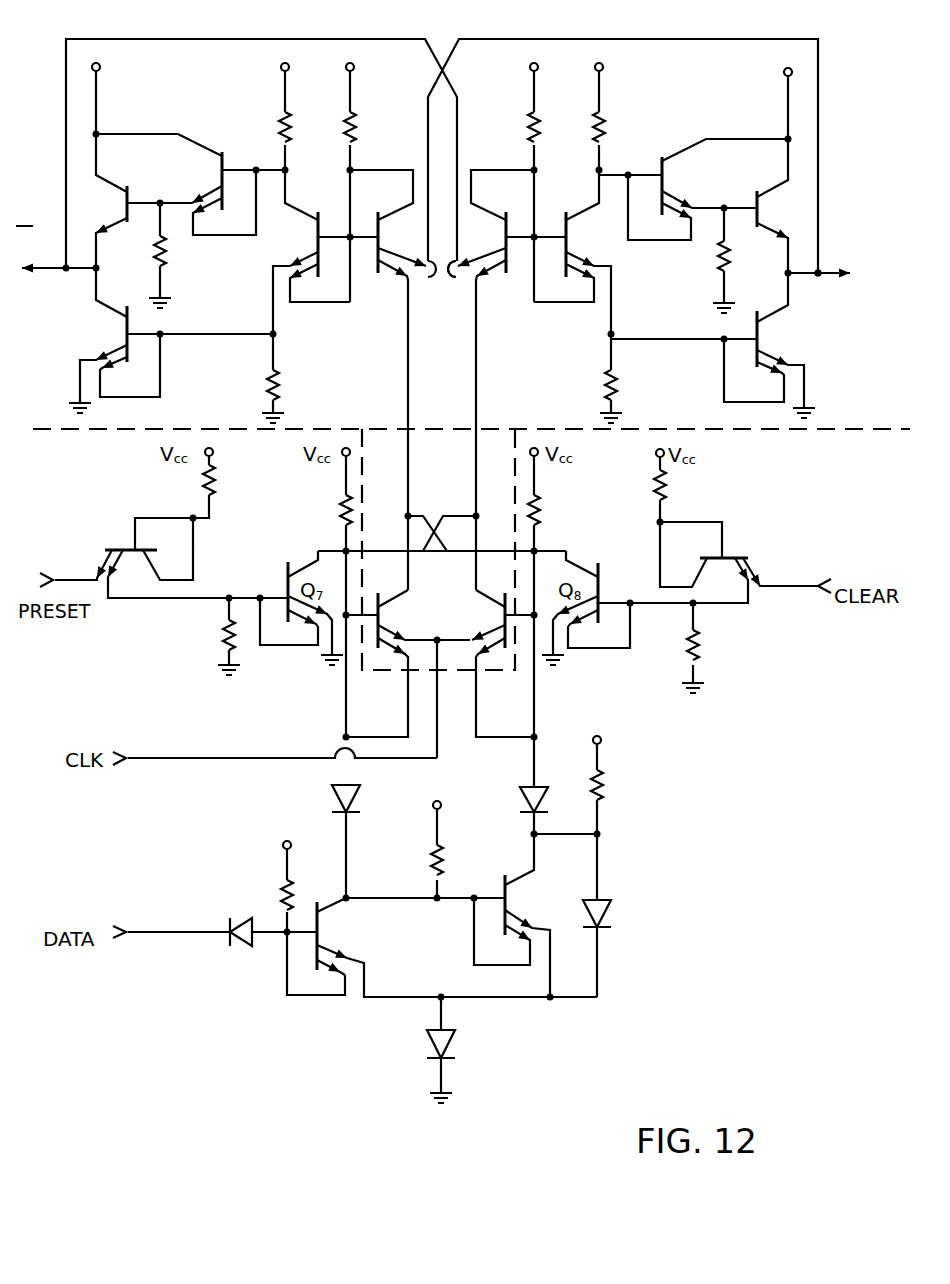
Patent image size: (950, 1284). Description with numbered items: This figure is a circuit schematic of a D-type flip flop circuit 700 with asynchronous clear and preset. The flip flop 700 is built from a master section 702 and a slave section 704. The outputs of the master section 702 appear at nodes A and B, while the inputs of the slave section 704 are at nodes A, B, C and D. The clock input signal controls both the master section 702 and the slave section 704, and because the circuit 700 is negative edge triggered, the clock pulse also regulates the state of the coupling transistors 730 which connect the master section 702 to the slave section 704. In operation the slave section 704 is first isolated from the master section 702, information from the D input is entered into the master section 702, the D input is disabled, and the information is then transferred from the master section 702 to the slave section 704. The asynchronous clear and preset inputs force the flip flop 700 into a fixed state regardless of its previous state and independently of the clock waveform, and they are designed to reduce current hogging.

The D-type flip flop circuit 700 is at (638, 38).
The master section 702 is at (506, 852).
The slave section 704 is at (458, 390).
The coupling transistors 730 is at (455, 604).